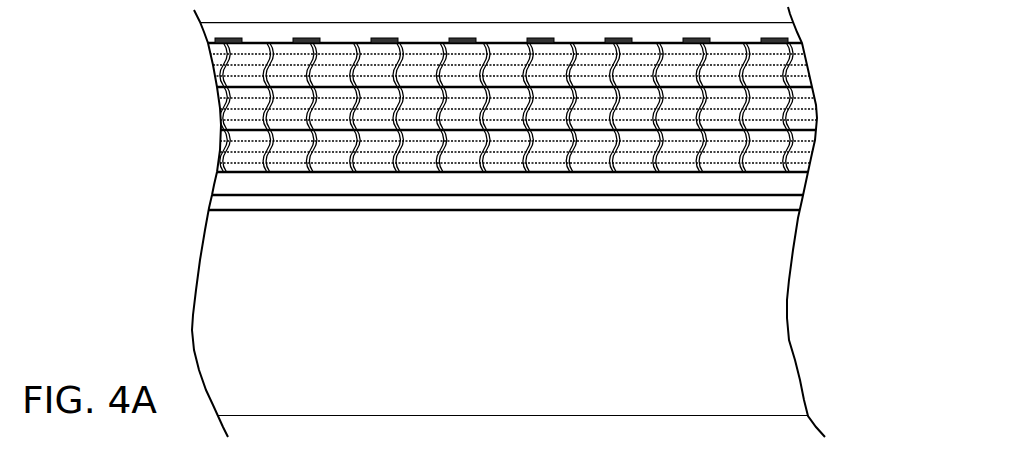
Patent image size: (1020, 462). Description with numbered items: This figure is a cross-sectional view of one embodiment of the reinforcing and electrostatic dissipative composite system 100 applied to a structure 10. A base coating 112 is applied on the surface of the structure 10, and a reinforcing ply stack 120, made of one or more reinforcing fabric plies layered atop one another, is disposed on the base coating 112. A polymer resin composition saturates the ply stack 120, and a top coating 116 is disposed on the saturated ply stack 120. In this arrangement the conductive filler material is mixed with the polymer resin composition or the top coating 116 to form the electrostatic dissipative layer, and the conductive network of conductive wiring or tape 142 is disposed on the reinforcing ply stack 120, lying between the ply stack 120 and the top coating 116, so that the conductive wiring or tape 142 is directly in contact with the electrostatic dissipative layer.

The reinforcing and electrostatic dissipative (ESD) composite system 100 is at (130, 181).
The structure 10 is at (755, 330).
The base coating 112 is at (803, 197).
The reinforcing ply stack 120 is at (817, 112).
The top coating 116 is at (790, 29).
The conductive wiring or tape 142 is at (228, 40).